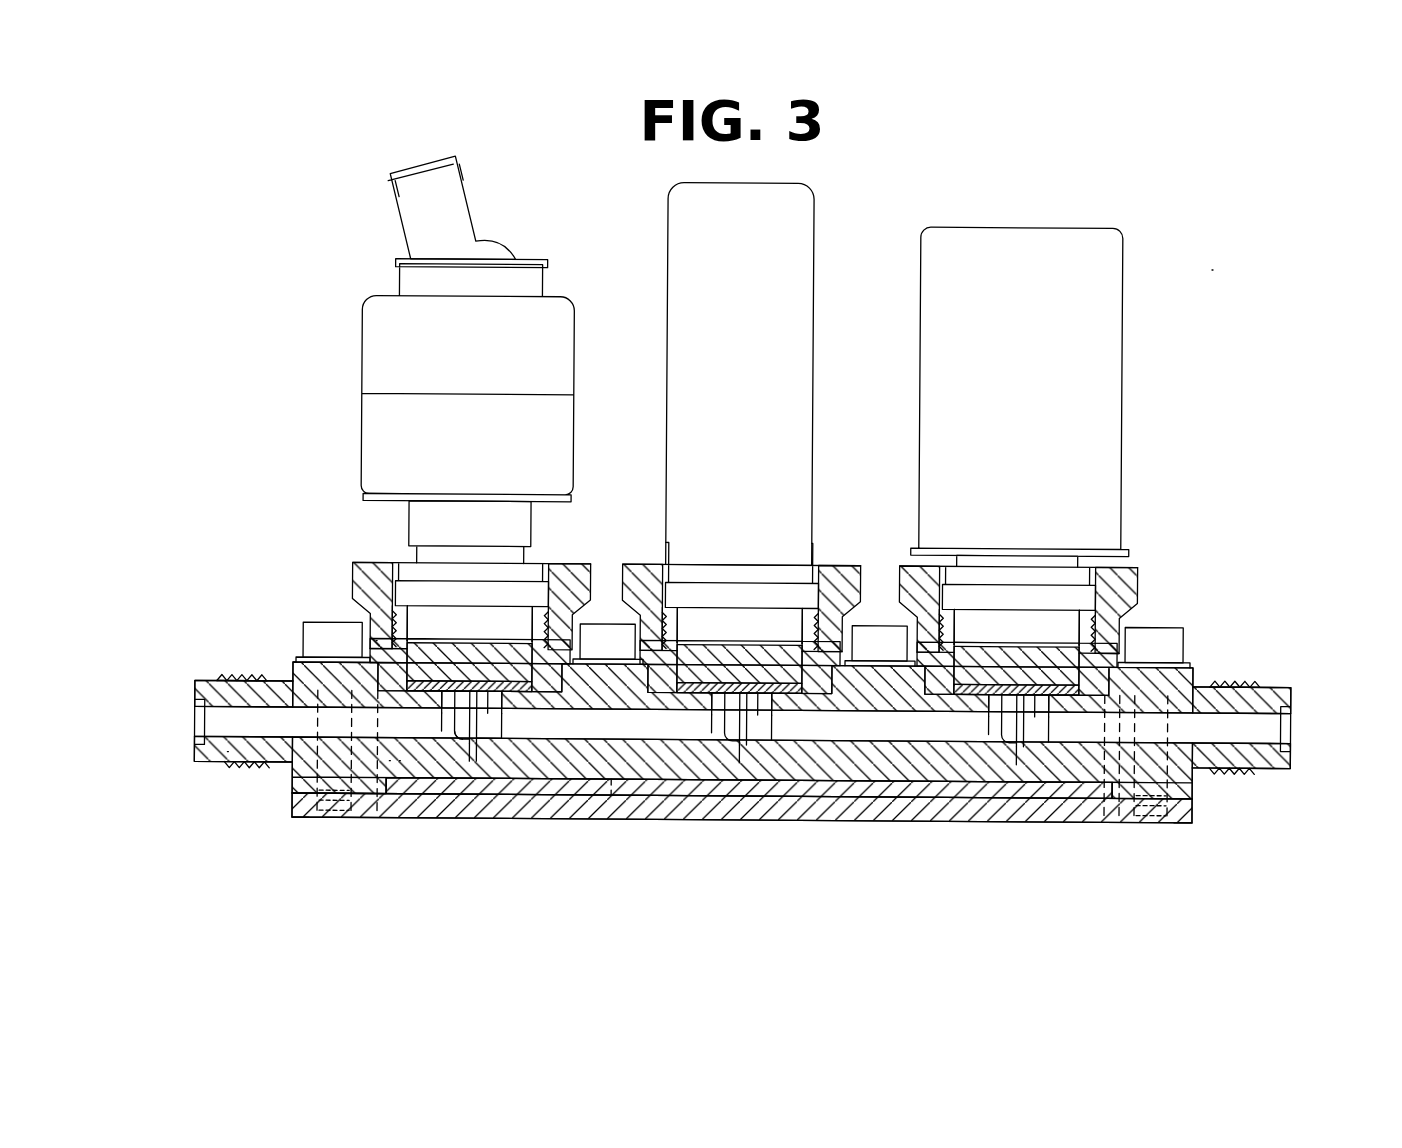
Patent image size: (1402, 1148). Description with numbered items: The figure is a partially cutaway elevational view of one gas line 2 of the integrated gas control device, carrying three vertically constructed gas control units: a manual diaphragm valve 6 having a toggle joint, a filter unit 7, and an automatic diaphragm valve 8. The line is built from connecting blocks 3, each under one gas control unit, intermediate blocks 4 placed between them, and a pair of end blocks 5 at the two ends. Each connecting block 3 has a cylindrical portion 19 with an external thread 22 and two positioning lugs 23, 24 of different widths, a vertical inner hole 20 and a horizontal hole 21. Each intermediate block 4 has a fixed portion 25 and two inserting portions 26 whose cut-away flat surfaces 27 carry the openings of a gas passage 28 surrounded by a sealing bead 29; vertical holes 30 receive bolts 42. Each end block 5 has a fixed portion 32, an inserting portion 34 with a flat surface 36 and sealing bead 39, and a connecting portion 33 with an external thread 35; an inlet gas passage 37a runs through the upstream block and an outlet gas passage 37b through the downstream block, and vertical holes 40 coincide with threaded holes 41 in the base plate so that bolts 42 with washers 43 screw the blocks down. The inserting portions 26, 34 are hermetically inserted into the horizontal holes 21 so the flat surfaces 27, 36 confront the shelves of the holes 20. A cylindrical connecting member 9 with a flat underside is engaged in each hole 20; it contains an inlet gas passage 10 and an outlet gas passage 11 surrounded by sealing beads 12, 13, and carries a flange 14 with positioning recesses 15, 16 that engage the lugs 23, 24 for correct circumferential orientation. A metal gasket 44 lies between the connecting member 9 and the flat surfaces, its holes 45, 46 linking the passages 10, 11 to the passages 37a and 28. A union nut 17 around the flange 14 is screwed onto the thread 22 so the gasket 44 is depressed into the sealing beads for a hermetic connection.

The gas line 2 is at (1212, 270).
The connecting block 3 is at (458, 760).
The intermediate block 4 is at (570, 805).
The end block 5 is at (270, 785).
The manual diaphragm valve 6 is at (520, 224).
The filter unit 7 is at (820, 210).
The automatic diaphragm valve 8 is at (1130, 236).
The connecting member 9 is at (560, 600).
The inlet gas passage 10 is at (428, 620).
The outlet gas passage 11 is at (500, 620).
The sealing bead 12 is at (397, 615).
The sealing bead 13 is at (520, 560).
The flange 14 is at (585, 640).
The positioning recess 15 is at (370, 600).
The positioning recess 16 is at (548, 610).
The union nut 17 is at (355, 570).
The cylindrical portion 19 is at (378, 642).
The vertical inner hole 20 is at (838, 630).
The horizontal hole 21 is at (816, 810).
The external thread 22 is at (596, 610).
The positioning lug 23 is at (680, 560).
The positioning lug 24 is at (812, 560).
The fixed portion 25 is at (600, 800).
The inserting portion 26 is at (468, 750).
The flat surface 27 is at (488, 725).
The gas passage 28 is at (614, 817).
The sealing bead 29 is at (487, 740).
The vertical hole 30 is at (625, 800).
The fixed portion 32 is at (297, 812).
The connecting portion 33 is at (210, 680).
The inserting portion 34 is at (385, 790).
The external thread 35 is at (250, 767).
The flat surface 36 is at (385, 790).
The inlet gas passage 37a is at (232, 722).
The outlet gas passage 37b is at (1262, 712).
The sealing bead 39 is at (398, 750).
The vertical hole 40 is at (1150, 815).
The threaded hole 41 is at (340, 805).
The bolt 42 is at (310, 637).
The washer 43 is at (300, 658).
The metal gasket 44 is at (470, 680).
The hole 45 is at (443, 737).
The hole 46 is at (478, 720).